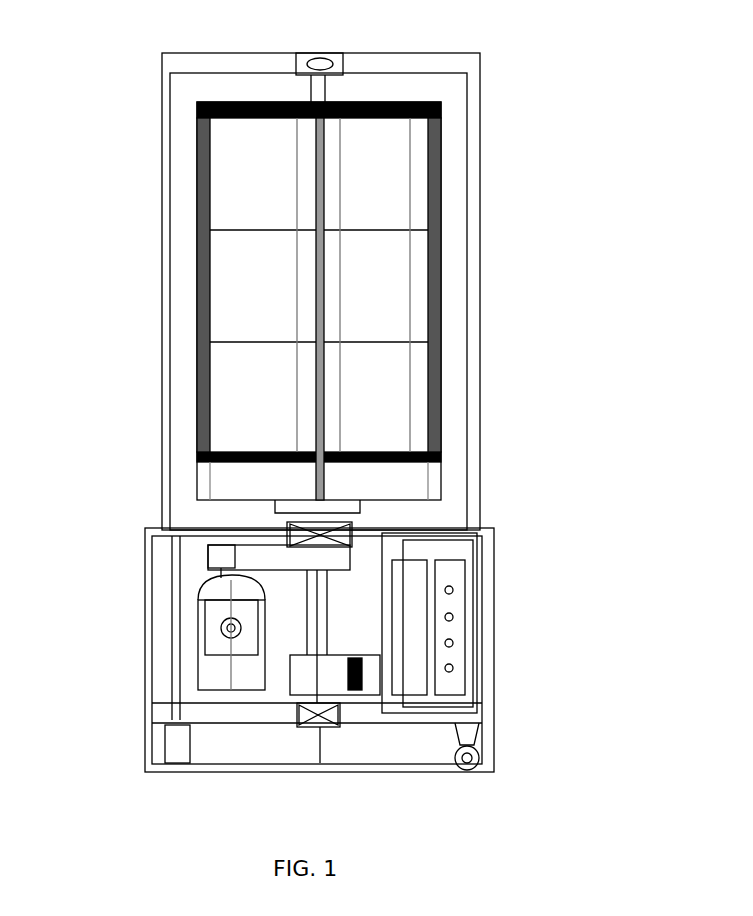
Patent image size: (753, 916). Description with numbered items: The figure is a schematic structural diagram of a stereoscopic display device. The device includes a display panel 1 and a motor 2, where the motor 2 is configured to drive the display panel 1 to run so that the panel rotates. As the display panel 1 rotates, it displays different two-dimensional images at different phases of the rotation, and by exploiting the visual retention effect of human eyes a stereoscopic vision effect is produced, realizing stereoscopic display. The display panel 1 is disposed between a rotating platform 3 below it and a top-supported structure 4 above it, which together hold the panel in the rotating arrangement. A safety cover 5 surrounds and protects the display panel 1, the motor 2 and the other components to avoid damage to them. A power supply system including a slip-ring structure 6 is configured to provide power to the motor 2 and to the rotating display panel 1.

The display panel 1 is at (250, 301).
The motor 2 is at (162, 587).
The rotating platform 3 is at (381, 509).
The top-supported structure 4 is at (373, 56).
The safety cover 5 is at (269, 291).
The slip-ring structure 6 is at (220, 694).